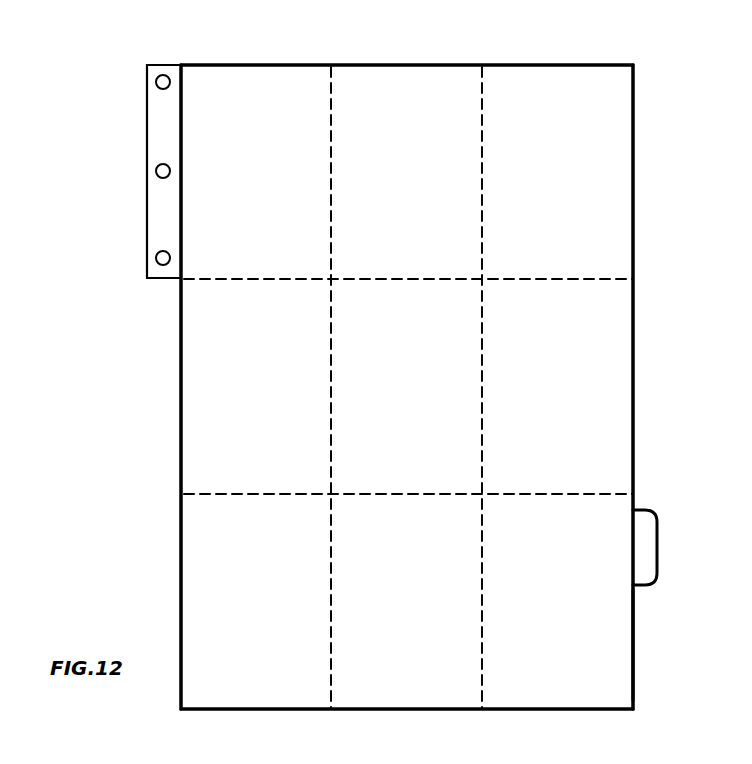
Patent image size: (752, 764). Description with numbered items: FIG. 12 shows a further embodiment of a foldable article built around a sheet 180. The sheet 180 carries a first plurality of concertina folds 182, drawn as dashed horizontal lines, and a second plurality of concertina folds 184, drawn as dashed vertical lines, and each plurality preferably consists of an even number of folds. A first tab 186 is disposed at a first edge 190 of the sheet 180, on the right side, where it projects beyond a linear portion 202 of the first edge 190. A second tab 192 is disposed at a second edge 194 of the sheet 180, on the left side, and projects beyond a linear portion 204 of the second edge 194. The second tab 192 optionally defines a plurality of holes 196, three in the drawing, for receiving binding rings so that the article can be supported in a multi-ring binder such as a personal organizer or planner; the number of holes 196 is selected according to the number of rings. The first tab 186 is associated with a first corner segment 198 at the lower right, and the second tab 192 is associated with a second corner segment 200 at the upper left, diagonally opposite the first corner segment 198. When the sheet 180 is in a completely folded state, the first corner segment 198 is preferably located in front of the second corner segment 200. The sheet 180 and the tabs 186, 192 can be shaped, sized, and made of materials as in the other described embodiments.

The sheet 180 is at (612, 65).
The first plurality of concertina folds 182 is at (612, 281).
The second plurality of concertina folds 184 is at (333, 84).
The first tab 186 is at (658, 538).
The first edge 190 is at (634, 388).
The second tab 192 is at (163, 64).
The second edge 194 is at (181, 412).
The holes 196 is at (156, 82).
The first corner segment 198 is at (618, 690).
The second corner segment 200 is at (262, 76).
The linear portion of the first edge 202 is at (636, 622).
The linear portion of the second edge 204 is at (181, 313).